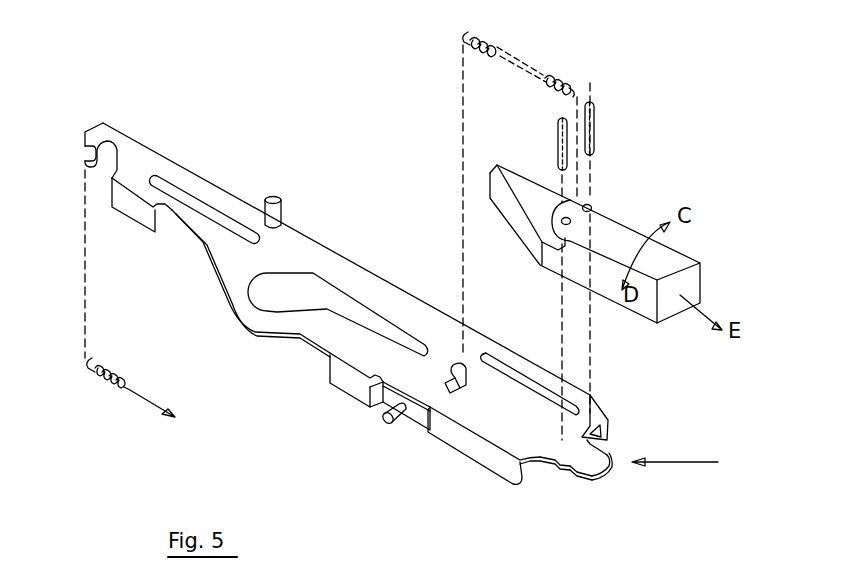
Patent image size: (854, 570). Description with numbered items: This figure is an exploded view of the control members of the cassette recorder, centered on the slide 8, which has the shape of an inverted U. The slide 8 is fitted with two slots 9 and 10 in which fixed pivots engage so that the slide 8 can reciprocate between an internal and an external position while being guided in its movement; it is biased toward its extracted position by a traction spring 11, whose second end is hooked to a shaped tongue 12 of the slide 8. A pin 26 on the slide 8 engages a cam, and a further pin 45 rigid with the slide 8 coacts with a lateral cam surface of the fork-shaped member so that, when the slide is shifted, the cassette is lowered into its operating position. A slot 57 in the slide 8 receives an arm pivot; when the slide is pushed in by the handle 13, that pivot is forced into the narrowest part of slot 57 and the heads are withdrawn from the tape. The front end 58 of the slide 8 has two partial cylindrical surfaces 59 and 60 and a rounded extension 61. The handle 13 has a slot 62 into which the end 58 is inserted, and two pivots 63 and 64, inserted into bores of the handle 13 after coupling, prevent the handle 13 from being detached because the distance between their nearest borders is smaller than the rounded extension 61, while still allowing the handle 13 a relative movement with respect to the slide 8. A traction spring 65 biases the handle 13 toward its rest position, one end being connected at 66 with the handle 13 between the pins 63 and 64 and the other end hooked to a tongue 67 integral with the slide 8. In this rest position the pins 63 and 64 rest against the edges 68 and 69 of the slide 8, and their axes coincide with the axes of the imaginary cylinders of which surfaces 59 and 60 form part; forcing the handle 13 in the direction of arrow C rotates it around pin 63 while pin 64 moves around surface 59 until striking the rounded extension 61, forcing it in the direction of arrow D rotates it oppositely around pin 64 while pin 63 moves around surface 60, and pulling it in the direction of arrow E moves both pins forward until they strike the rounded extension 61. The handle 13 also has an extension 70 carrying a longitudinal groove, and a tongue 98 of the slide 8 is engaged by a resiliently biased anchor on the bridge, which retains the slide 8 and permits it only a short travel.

The slide 8 is at (477, 457).
The slot 9 is at (500, 354).
The slot 10 is at (177, 198).
The traction spring 11 is at (115, 378).
The shaped tongue 12 is at (85, 162).
The handle 13 is at (678, 260).
The pin 26 is at (273, 196).
The pin 45 is at (391, 420).
The slot 57 is at (278, 312).
The front end 58 is at (689, 463).
The partial cylindrical surface 59 is at (565, 474).
The partial cylindrical surface 60 is at (602, 448).
The rounded extension 61 is at (610, 480).
The slot 62 is at (553, 245).
The pivot 63 is at (596, 128).
The pivot 64 is at (556, 152).
The traction spring 65 is at (512, 52).
The connection point 66 is at (580, 217).
The tongue 67 is at (453, 363).
The edge 68 is at (608, 425).
The edge 69 is at (550, 470).
The extension 70 is at (490, 205).
The tongue 98 is at (167, 223).